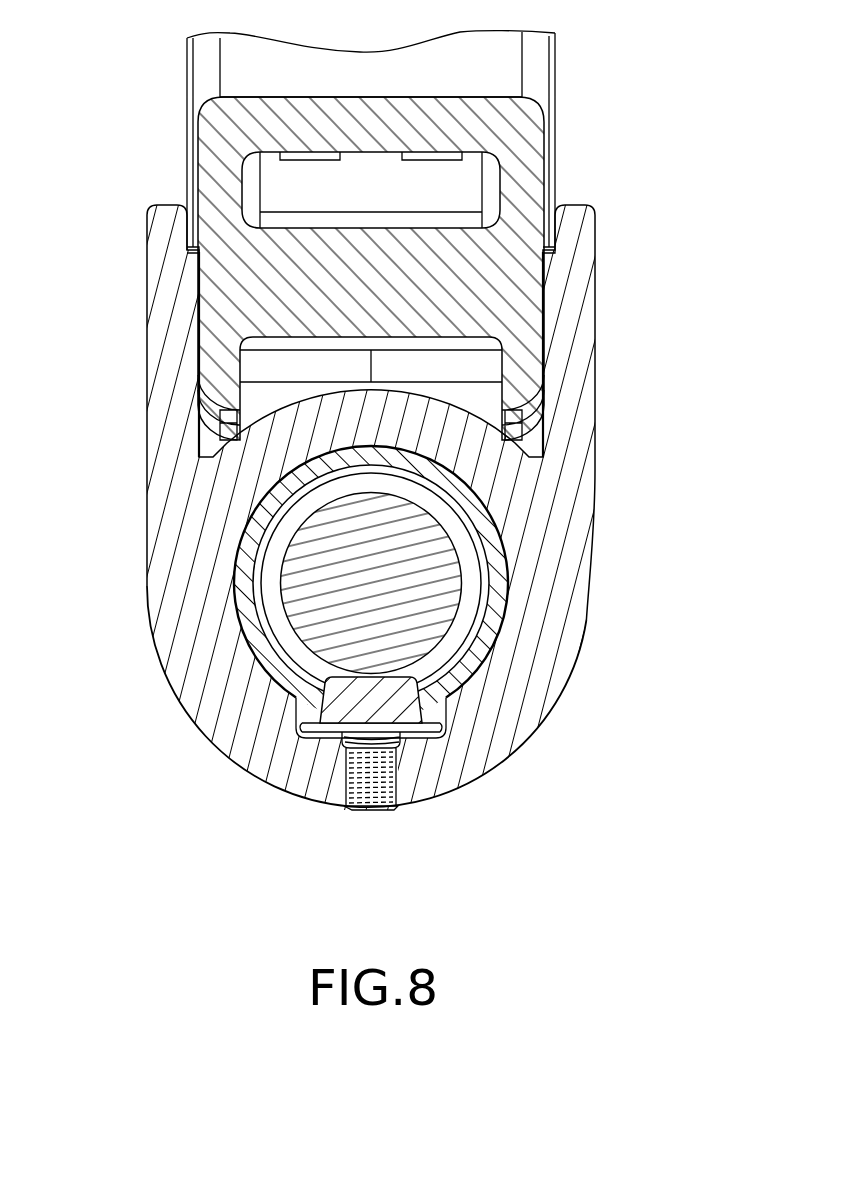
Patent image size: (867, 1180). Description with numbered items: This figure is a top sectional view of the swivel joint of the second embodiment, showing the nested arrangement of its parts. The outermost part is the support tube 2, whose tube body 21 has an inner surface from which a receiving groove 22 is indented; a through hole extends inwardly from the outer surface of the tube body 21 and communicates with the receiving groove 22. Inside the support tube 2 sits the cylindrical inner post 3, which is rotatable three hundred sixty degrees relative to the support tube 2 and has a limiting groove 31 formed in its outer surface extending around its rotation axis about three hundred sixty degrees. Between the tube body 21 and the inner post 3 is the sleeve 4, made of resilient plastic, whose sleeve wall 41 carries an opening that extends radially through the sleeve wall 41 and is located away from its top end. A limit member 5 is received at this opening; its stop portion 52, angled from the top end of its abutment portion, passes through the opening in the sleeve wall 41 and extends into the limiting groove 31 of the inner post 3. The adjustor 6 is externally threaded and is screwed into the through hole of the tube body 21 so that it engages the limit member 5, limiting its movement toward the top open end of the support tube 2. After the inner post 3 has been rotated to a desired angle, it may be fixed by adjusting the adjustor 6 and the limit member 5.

The support tube 2 is at (165, 683).
The tube body 21 is at (207, 714).
The receiving groove 22 is at (318, 737).
The inner post 3 is at (440, 570).
The limiting groove 31 is at (466, 593).
The sleeve wall 41 is at (480, 647).
The sleeve 4 is at (465, 583).
The stop portion 52 is at (395, 700).
The limit member 5 is at (405, 772).
The adjustor 6 is at (346, 752).